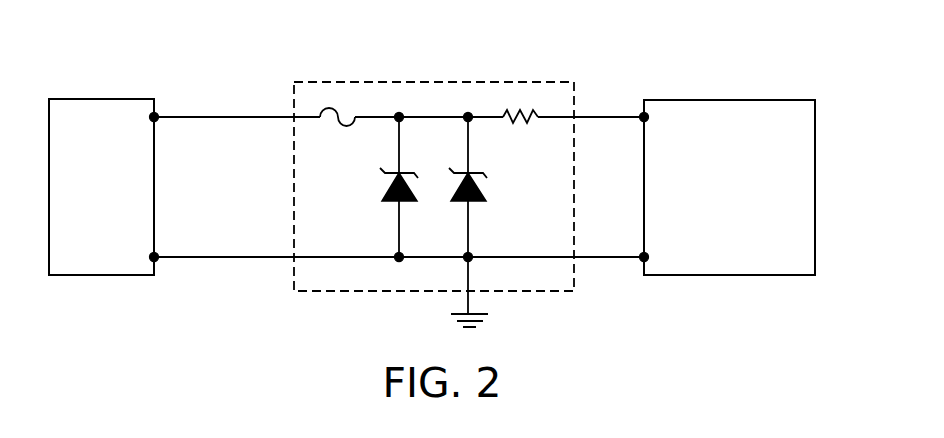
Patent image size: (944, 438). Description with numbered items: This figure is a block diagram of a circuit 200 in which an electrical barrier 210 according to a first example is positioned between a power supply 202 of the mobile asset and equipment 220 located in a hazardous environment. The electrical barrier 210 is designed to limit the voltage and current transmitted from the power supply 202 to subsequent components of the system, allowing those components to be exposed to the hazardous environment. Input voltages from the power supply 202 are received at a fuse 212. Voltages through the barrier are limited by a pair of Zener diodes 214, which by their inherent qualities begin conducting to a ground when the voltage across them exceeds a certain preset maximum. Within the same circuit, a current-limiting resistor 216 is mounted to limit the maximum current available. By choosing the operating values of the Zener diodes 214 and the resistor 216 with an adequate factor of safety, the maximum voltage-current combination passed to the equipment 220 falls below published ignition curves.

The circuit 200 is at (756, 41).
The power supply 202 is at (112, 99).
The electrical barrier 210 is at (306, 81).
The fuse 212 is at (372, 99).
The Zener diodes 214 is at (362, 181).
The current-limiting resistor 216 is at (558, 98).
The equipment 220 is at (703, 100).